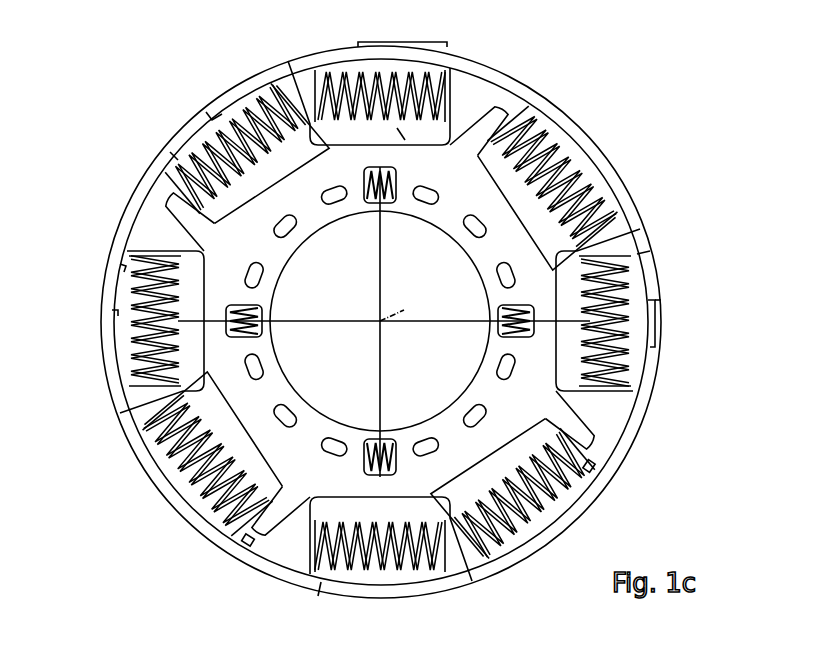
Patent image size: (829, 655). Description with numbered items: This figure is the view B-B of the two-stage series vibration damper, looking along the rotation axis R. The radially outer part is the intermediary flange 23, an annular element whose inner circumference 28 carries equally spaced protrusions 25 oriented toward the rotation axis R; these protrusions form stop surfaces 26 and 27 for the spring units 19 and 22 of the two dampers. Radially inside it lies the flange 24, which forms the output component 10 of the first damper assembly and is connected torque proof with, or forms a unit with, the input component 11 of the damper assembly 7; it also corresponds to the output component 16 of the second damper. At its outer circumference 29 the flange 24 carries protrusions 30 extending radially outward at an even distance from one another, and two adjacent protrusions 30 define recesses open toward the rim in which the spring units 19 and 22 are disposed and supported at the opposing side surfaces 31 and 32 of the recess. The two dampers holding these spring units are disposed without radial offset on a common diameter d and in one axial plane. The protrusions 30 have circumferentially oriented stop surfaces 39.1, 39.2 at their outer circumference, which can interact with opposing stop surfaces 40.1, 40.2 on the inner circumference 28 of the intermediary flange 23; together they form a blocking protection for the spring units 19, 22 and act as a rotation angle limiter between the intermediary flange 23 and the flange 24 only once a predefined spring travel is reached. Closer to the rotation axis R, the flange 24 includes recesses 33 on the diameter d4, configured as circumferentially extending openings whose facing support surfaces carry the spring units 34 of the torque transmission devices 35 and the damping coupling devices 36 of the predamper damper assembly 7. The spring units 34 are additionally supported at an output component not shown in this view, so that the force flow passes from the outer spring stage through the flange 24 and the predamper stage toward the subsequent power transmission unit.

The damper assembly 7 is at (530, 344).
The output component 10 is at (386, 330).
The input component 11 is at (386, 330).
The output component 16 is at (386, 330).
The spring unit 19 is at (320, 66).
The spring unit 22 is at (247, 110).
The intermediary flange 23 is at (256, 63).
The flange 24 is at (490, 200).
The protrusions 25 is at (288, 80).
The stop surface 26 is at (652, 294).
The stop surface 27 is at (615, 214).
The inner circumference 28 is at (368, 60).
The outer circumference 29 is at (407, 140).
The protrusions 30 is at (605, 442).
The side surface 31 is at (325, 594).
The side surface 32 is at (234, 552).
The recesses 33 is at (243, 305).
The spring units 34 is at (225, 291).
The torque transmission devices 35 is at (225, 291).
The damping coupling devices 36 is at (225, 291).
The stop surface 39.1 is at (122, 270).
The stop surface 39.2 is at (177, 157).
The stop surface 40.1 is at (115, 318).
The stop surface 40.2 is at (210, 116).
The common diameter d is at (318, 318).
The diameter d4 is at (381, 284).
The rotation axis R is at (405, 311).